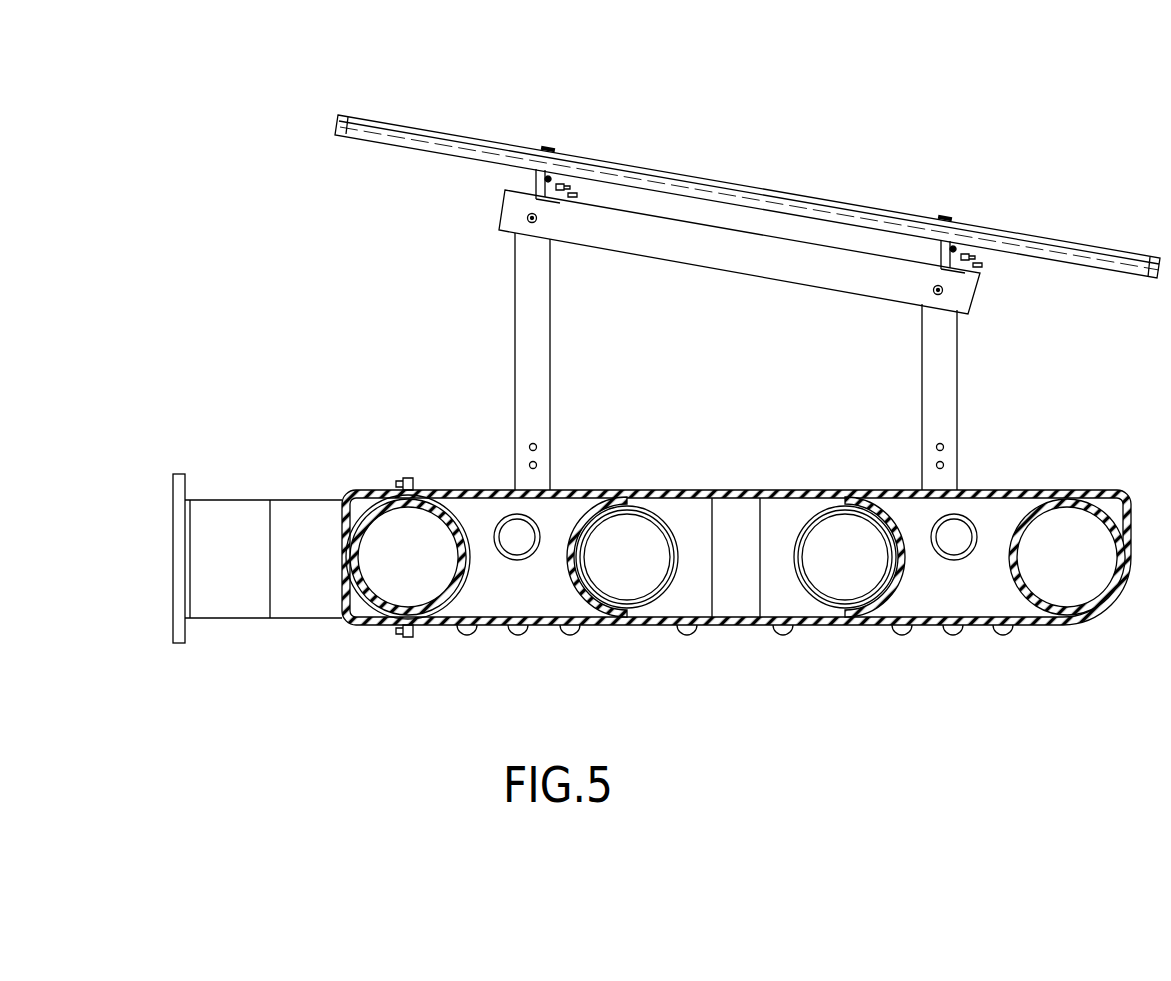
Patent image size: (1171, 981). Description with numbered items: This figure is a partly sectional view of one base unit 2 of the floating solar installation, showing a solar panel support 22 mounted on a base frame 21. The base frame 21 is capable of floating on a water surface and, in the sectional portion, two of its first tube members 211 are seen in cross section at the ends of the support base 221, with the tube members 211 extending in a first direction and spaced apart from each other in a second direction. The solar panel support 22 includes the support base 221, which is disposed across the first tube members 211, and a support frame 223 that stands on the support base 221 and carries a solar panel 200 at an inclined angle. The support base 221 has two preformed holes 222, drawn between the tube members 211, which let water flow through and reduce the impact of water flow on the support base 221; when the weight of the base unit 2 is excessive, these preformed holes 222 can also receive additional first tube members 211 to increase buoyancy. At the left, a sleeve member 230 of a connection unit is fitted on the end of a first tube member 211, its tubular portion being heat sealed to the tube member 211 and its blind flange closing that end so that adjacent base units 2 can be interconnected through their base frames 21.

The base unit 2 is at (240, 180).
The solar panel 200 is at (1043, 242).
The base frame 21 is at (287, 473).
The first tube member 211 is at (365, 618).
The solar panel support 22 is at (400, 396).
The support base 221 is at (780, 489).
The preformed hole 222 is at (630, 582).
The support frame 223 is at (958, 378).
The sleeve member 230 is at (168, 456).